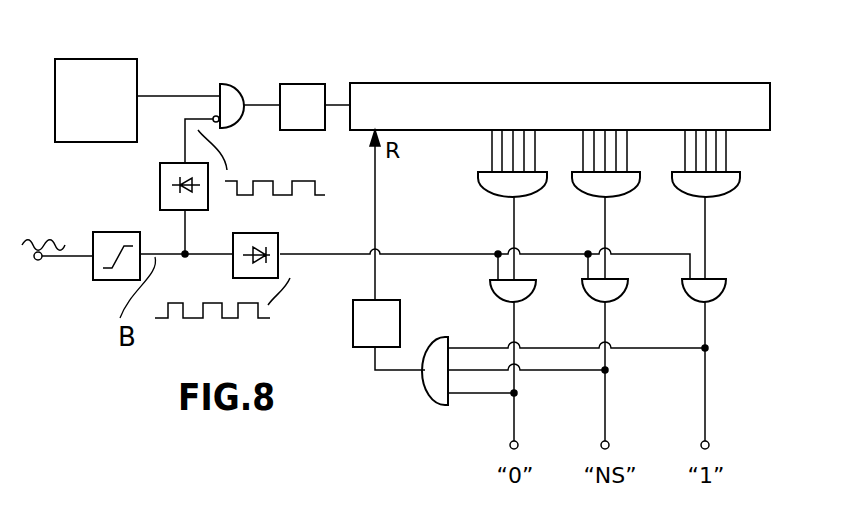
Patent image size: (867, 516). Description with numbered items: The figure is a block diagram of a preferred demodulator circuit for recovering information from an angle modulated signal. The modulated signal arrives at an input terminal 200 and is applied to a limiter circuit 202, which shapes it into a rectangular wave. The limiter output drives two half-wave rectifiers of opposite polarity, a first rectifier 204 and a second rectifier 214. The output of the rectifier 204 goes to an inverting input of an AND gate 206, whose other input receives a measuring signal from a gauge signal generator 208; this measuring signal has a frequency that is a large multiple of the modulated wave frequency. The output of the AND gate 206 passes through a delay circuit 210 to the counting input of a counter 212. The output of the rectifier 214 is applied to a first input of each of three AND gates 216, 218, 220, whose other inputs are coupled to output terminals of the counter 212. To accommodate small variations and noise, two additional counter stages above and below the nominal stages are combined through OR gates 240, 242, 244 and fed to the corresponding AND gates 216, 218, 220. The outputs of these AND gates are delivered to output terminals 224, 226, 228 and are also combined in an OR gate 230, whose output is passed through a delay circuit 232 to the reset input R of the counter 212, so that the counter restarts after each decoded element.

The input terminal 200 is at (37, 262).
The limiter circuit 202 is at (98, 242).
The first half-wave rectifier 204 is at (162, 203).
The AND gate 206 is at (237, 92).
The gauge signal generator 208 is at (99, 68).
The delay circuit 210 is at (300, 83).
The counter 212 is at (388, 93).
The second half-wave rectifier 214 is at (277, 233).
The AND gate 216 is at (490, 291).
The AND gate 218 is at (584, 300).
The AND gate 220 is at (684, 296).
The output terminal 224 is at (511, 427).
The output terminal 226 is at (602, 422).
The output terminal 228 is at (702, 420).
The OR gate 230 is at (430, 380).
The delay circuit 232 is at (353, 333).
The OR gate 240 is at (530, 193).
The OR gate 242 is at (633, 185).
The OR gate 244 is at (728, 185).